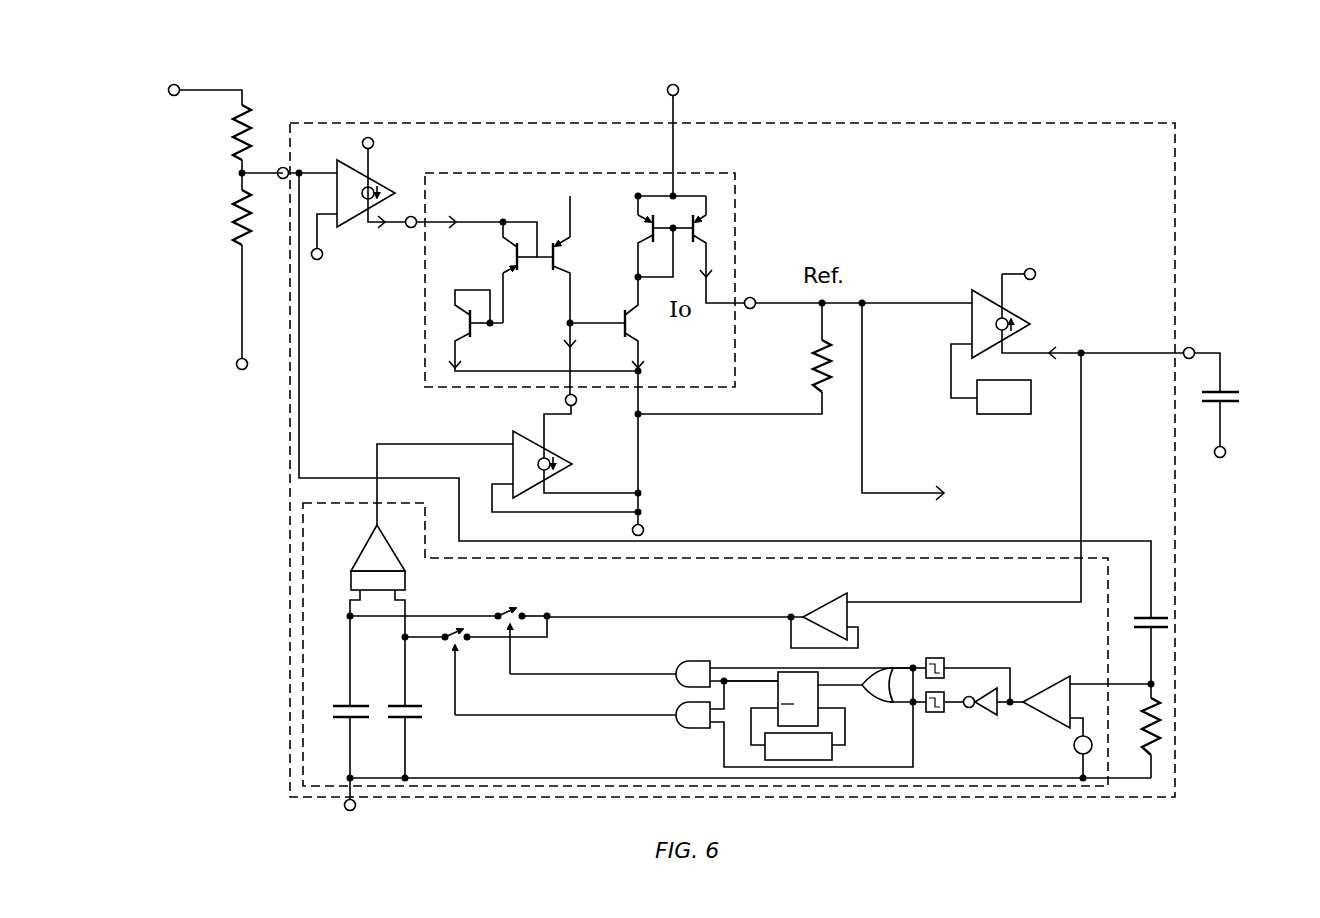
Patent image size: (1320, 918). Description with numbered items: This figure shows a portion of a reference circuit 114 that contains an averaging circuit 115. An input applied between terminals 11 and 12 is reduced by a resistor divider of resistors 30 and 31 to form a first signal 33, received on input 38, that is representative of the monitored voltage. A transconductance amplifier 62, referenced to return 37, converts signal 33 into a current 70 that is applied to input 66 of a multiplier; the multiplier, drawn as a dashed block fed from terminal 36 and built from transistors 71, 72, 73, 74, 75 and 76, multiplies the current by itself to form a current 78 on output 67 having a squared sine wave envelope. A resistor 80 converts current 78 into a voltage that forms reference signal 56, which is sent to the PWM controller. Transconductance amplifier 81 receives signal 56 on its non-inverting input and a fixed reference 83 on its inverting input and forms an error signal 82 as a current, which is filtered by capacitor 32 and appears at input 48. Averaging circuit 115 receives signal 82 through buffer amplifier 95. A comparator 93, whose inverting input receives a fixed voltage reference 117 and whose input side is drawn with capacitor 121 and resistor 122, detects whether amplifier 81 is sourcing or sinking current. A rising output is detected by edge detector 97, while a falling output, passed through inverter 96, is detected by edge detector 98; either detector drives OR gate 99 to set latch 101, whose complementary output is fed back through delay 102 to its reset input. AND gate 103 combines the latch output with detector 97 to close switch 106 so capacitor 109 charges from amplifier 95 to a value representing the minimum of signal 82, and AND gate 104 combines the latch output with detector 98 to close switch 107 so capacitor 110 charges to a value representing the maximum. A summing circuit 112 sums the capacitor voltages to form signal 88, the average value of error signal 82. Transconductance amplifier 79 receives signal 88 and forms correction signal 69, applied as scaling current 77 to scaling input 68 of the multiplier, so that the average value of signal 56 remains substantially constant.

The input terminal 11 is at (178, 85).
The common return terminal 12 is at (237, 369).
The resistor 30 is at (228, 130).
The resistor 31 is at (230, 222).
The capacitor 32 is at (1222, 386).
The first signal 33 is at (259, 178).
The supply terminal 36 is at (680, 86).
The return 37 is at (374, 140).
The input 38 is at (284, 166).
The input 48 is at (1193, 346).
The reference signal 56 is at (864, 400).
The transconductance amplifier 62 is at (352, 232).
The input 66 is at (407, 229).
The output 67 is at (753, 309).
The scaling input 68 is at (578, 405).
The correction signal 69 is at (553, 410).
The current 70 is at (452, 208).
The transistor 71 is at (475, 338).
The transistor 72 is at (512, 262).
The transistor 73 is at (563, 266).
The transistor 74 is at (632, 325).
The transistor 75 is at (646, 229).
The transistor 76 is at (712, 229).
The scaling current 77 is at (561, 345).
The current 78 is at (715, 268).
The transconductance amplifier 79 is at (560, 476).
The resistor 80 is at (814, 364).
The transconductance amplifier 81 is at (985, 290).
The error signal 82 is at (1042, 347).
The fixed reference circuit 83 is at (1005, 414).
The signal 88 is at (445, 440).
The current comparator 93 is at (1035, 691).
The amplifier 95 is at (823, 601).
The inverter 96 is at (985, 715).
The edge detector 97 is at (932, 658).
The edge detector 98 is at (938, 712).
The OR gate 99 is at (876, 702).
The latch 101 is at (778, 690).
The delay circuit 102 is at (832, 752).
The AND gate 103 is at (700, 661).
The AND gate 104 is at (700, 728).
The switch 106 is at (512, 605).
The switch 107 is at (463, 652).
The capacitor 109 is at (355, 702).
The capacitor 110 is at (410, 700).
The summing circuit 112 is at (352, 566).
The reference circuit 114 is at (1177, 214).
The averaging circuit 115 is at (723, 562).
The fixed voltage reference 117 is at (1074, 748).
The capacitor 121 is at (1163, 617).
The resistor 122 is at (1160, 728).